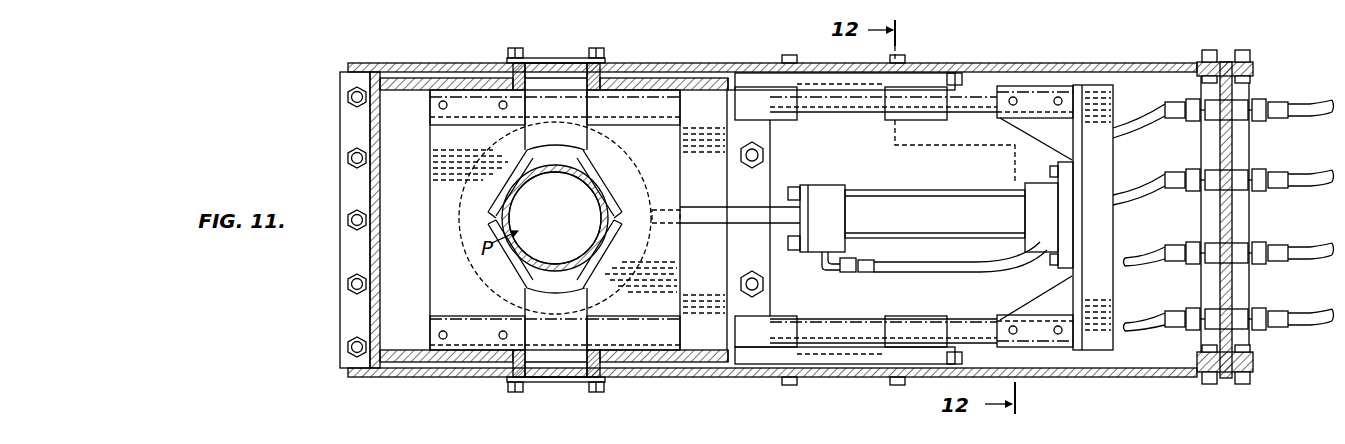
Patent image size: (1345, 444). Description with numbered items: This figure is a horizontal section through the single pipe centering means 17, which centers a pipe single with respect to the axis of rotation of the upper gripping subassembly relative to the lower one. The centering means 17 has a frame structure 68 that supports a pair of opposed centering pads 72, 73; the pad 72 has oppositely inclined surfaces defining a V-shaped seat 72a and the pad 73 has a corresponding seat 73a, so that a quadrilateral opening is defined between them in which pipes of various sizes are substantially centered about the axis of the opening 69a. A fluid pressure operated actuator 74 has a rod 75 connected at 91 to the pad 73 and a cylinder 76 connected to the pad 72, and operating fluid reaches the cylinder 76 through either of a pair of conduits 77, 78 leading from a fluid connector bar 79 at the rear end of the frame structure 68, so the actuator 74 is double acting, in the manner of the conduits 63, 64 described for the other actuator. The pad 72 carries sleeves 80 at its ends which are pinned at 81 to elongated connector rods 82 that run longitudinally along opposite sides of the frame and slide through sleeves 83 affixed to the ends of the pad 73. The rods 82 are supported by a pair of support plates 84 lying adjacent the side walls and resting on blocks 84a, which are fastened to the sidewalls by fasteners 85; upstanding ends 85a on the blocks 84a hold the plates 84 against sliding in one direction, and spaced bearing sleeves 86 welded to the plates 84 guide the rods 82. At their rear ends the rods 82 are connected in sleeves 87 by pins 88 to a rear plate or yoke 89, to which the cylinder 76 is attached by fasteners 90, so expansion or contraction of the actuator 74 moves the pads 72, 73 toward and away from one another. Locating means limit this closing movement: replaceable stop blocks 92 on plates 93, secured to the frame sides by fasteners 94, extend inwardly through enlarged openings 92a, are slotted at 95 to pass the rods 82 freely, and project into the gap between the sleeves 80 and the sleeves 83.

The pipe centering means 17 is at (390, 379).
The conduit 63 is at (1162, 320).
The conduit 64 is at (1150, 250).
The frame structure 68 is at (468, 79).
The opening 69a is at (553, 314).
The centering pad 72 is at (440, 252).
The V-shaped seat 72a is at (508, 222).
The centering pad 73 is at (672, 173).
The seat 73a is at (600, 220).
The fluid pressure operated actuator 74 is at (923, 190).
The rod 75 is at (716, 224).
The cylinder 76 is at (918, 216).
The conduit 77 is at (1143, 184).
The conduit 78 is at (1138, 114).
The fluid connector bar 79 is at (1240, 234).
The sleeve 80 is at (490, 105).
The pin 81 is at (439, 105).
The connector rod 82 is at (715, 100).
The sleeve 83 is at (652, 112).
The support plate 84 is at (862, 80).
The block 84a is at (834, 88).
The fastener 85 is at (790, 56).
The upstanding end 85a is at (940, 73).
The bearing sleeve 86 is at (785, 120).
The sleeve 87 is at (1043, 97).
The pin 88 is at (1013, 96).
The rear plate or yoke 89 is at (1078, 293).
The fastener 90 is at (1052, 171).
The connection 91 is at (659, 212).
The block 92 is at (562, 72).
The enlarged opening 92a is at (530, 76).
The plate 93 is at (538, 62).
The fastener 94 is at (598, 56).
The slot 95 is at (560, 97).